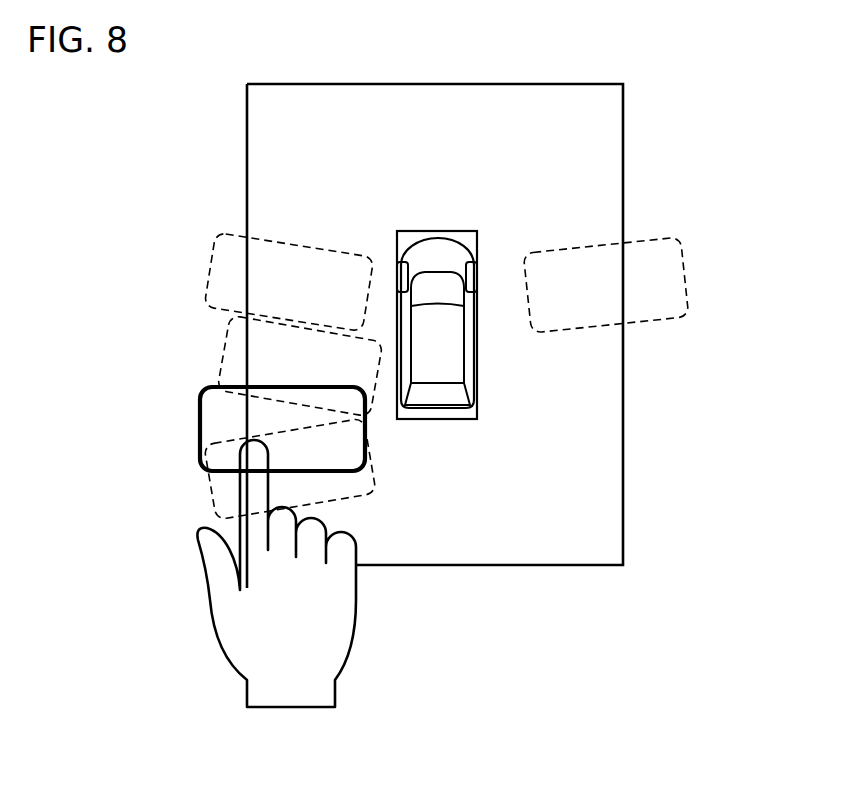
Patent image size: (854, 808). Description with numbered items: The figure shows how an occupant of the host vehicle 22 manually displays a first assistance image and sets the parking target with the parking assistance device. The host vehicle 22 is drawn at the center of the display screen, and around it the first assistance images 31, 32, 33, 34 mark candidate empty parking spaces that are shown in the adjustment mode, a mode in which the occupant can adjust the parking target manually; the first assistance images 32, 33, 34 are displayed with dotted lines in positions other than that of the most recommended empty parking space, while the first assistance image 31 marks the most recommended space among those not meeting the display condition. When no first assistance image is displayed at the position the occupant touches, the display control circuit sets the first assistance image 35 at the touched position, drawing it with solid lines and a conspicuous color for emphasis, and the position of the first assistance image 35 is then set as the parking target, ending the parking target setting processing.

The host vehicle 22 is at (441, 231).
The first assistance image 31 is at (210, 266).
The first assistance image 32 is at (222, 347).
The first assistance image 33 is at (206, 474).
The first assistance image 34 is at (688, 274).
The first assistance image 35 is at (200, 413).